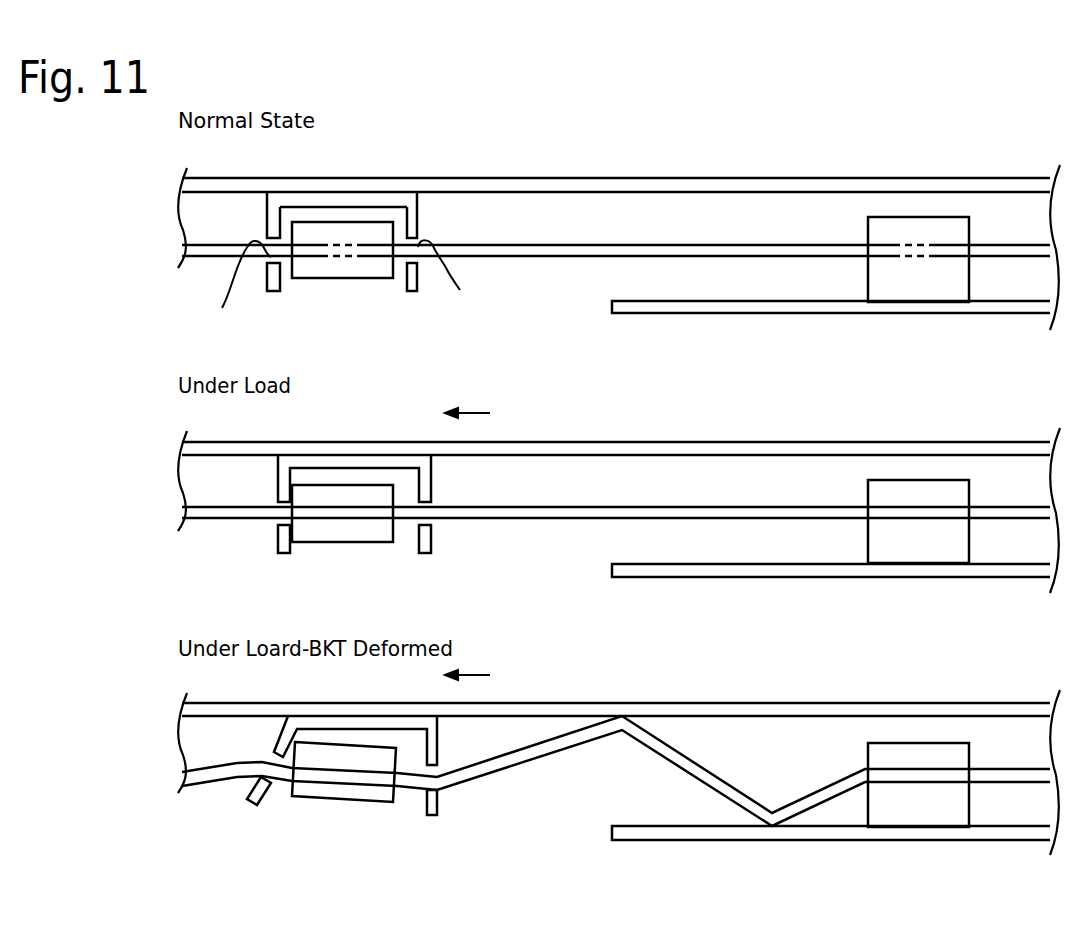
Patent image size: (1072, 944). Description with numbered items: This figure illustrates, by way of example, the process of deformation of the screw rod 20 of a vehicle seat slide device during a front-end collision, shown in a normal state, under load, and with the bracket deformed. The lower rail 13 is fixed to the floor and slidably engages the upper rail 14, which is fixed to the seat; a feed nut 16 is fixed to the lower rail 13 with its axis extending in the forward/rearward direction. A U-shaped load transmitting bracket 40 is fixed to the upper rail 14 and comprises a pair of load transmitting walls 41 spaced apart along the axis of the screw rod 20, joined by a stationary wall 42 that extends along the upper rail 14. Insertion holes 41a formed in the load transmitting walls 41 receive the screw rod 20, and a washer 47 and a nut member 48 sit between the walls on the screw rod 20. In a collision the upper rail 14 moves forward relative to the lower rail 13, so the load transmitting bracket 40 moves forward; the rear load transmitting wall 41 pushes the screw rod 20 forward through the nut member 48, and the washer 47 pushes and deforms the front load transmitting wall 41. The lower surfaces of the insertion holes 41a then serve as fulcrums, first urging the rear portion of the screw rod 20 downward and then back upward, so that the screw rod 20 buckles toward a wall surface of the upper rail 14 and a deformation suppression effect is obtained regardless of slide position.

The lower rail 13 is at (747, 309).
The upper rail 14 is at (581, 178).
The feed nut 16 is at (925, 293).
The screw rod 20 is at (547, 250).
The load transmitting bracket 40 is at (416, 194).
The load transmitting walls 41 is at (271, 293).
The insertion holes 41a is at (351, 287).
The stationary wall 42 is at (350, 197).
The washer 47 is at (344, 551).
The nut member 48 is at (330, 270).